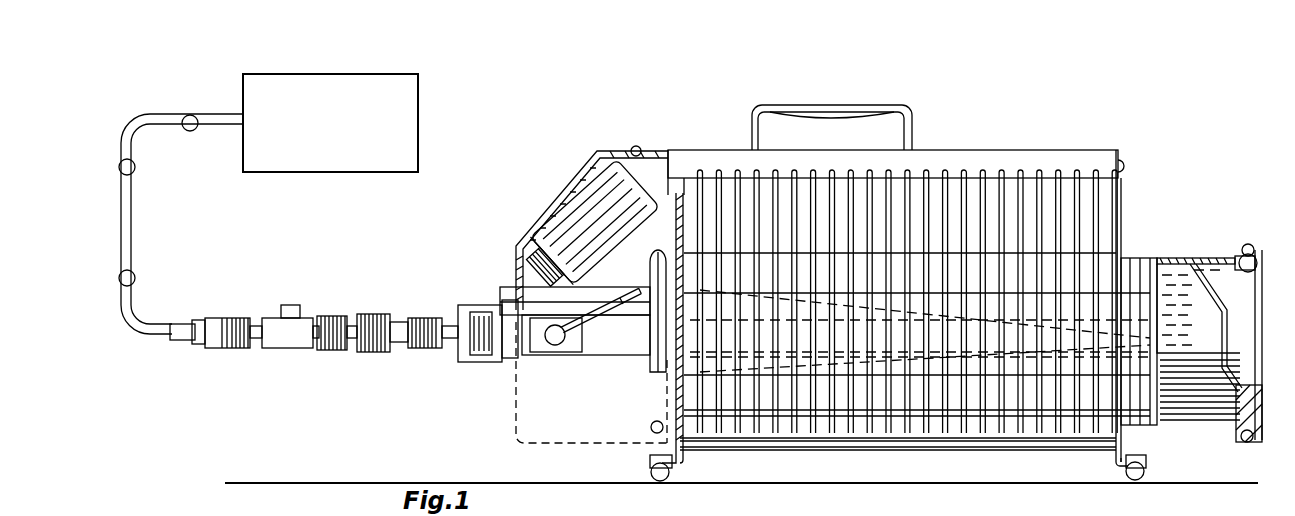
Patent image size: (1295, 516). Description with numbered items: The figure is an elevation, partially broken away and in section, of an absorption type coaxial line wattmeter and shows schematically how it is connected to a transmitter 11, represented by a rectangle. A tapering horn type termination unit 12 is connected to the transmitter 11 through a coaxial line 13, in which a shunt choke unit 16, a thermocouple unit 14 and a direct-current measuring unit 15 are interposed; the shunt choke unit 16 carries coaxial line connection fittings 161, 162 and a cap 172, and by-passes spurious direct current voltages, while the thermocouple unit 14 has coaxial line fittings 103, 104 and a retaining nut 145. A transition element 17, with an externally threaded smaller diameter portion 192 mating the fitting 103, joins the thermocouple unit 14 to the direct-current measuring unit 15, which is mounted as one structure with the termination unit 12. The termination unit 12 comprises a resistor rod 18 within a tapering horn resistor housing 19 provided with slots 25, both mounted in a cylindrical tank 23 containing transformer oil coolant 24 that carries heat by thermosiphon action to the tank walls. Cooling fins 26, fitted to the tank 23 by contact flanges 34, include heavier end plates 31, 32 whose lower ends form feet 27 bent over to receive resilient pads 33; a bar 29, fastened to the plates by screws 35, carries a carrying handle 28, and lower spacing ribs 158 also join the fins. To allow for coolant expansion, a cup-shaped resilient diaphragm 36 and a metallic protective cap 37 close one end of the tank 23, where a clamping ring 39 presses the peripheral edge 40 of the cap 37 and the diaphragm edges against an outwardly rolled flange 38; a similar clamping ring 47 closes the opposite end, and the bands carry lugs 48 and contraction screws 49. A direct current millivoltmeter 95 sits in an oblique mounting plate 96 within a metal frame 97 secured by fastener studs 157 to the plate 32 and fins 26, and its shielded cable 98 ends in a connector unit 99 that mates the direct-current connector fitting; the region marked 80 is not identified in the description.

The transmitter 11 is at (412, 126).
The termination unit 12 is at (929, 277).
The coaxial line 13 is at (148, 332).
The thermocouple unit 14 is at (379, 361).
The direct-current measuring unit 15 is at (500, 350).
The shunt choke unit 16 is at (282, 361).
The transition element 17 is at (459, 308).
The resistor rod 18 is at (772, 448).
The resistor housing 19 is at (870, 440).
The tank 23 is at (1137, 262).
The coolant 24 is at (1182, 258).
The slots 25 is at (808, 440).
The cooling fins 26 is at (718, 200).
The feet 27 is at (684, 462).
The carrying handle 28 is at (806, 112).
The bar 29 is at (1010, 160).
The end plate 31 is at (1123, 232).
The end plate 32 is at (655, 433).
The resilient pads 33 is at (664, 482).
The contact flanges 34 is at (766, 433).
The screws 35 is at (673, 148).
The resilient diaphragm 36 is at (1222, 324).
The protective cap 37 is at (1262, 318).
The flange 38 is at (1238, 258).
The clamping ring 39 is at (1244, 250).
The peripheral edge 40 is at (1252, 257).
The clamping ring 47 is at (648, 356).
The lugs 48 is at (1250, 444).
The contraction screws 49 is at (660, 406).
The base plate 80 is at (535, 356).
The direct current millivoltmeter 95 is at (615, 240).
The oblique mounting plate 96 is at (598, 160).
The metal frame 97 is at (637, 147).
The shielded cable 98 is at (599, 312).
The connector unit 99 is at (553, 346).
The coaxial line fitting 103 is at (425, 318).
The coaxial line fitting 104 is at (343, 322).
The retaining nut 145 is at (375, 314).
The fastener studs 157 is at (506, 300).
The lower spacing ribs 158 is at (1032, 440).
The coaxial line connection fitting 161 is at (325, 326).
The coaxial line connection fitting 162 is at (260, 330).
The cap 172 is at (282, 312).
The externally threaded smaller diameter portion 192 is at (450, 340).